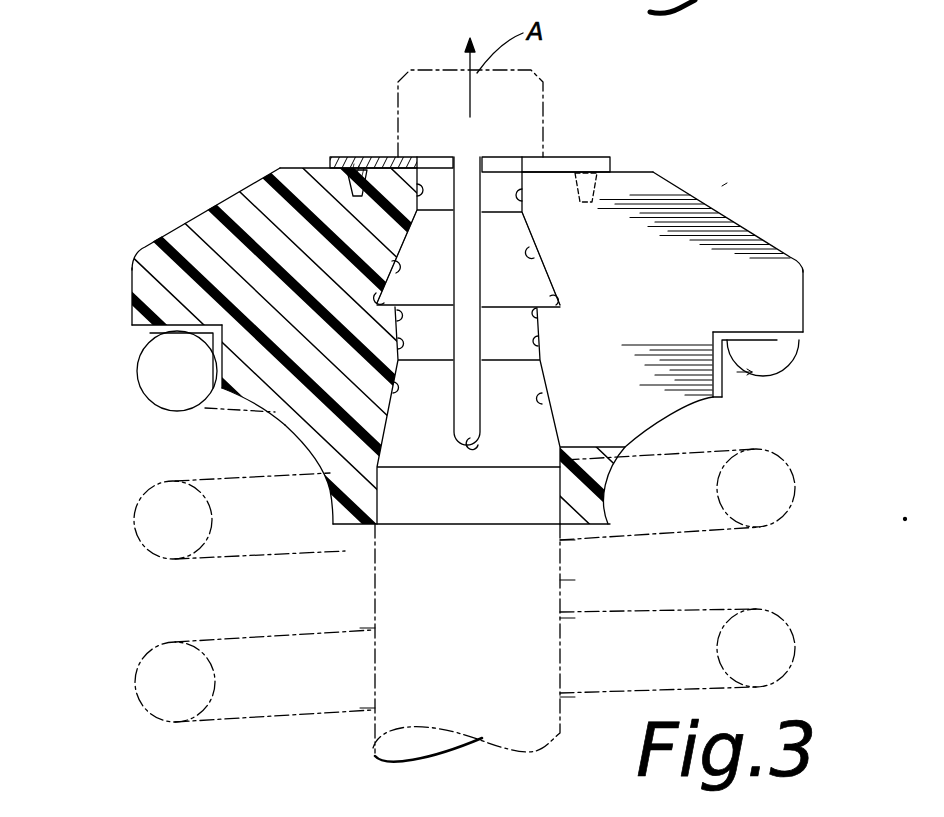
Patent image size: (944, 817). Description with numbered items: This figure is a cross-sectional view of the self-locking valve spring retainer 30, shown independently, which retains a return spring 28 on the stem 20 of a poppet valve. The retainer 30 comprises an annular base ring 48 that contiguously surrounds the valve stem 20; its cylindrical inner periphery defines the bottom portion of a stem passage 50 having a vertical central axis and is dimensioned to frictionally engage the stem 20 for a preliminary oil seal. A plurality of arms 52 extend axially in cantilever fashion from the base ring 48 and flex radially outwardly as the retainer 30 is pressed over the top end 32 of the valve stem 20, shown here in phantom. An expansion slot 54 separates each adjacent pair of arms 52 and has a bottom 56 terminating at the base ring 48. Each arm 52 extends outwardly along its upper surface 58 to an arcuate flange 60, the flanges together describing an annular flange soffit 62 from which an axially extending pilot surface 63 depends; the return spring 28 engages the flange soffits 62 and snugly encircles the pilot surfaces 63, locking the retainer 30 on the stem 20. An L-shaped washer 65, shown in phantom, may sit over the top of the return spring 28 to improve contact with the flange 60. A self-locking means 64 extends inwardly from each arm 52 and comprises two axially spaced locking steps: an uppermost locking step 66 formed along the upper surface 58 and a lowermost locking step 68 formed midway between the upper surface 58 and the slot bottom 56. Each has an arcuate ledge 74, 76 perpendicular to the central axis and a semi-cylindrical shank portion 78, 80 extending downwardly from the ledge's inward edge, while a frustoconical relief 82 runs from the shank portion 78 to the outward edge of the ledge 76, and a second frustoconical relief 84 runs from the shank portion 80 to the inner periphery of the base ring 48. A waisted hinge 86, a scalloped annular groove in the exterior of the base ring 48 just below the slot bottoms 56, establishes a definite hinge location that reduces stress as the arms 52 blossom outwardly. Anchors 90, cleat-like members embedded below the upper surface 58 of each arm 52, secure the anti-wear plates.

The stem 20 is at (542, 580).
The return spring 28 is at (770, 480).
The self-locking valve spring retainer 30 is at (727, 183).
The top end 32 is at (543, 70).
The annular base ring 48 is at (370, 518).
The stem passage 50 is at (370, 526).
The arms 52 is at (197, 213).
The expansion slot 54 is at (460, 183).
The bottom 56 is at (607, 443).
The upper surface 58 is at (287, 165).
The arcuate flange 60 is at (132, 273).
The flange soffit 62 is at (150, 333).
The pilot surface 63 is at (205, 372).
The self-locking means 64 is at (517, 178).
The L-shaped washer 65 is at (720, 402).
The uppermost locking step 66 is at (420, 160).
The lowermost locking step 68 is at (396, 344).
The arcuate ledge 74 is at (400, 156).
The arcuate ledge 76 is at (378, 298).
The semi-cylindrical shank portion 78 is at (418, 193).
The semi-cylindrical shank portion 80 is at (396, 345).
The frustoconical relief 82 is at (390, 270).
The frustoconical relief 84 is at (392, 388).
The waisted hinge 86 is at (607, 487).
The anchors 90 is at (353, 188).